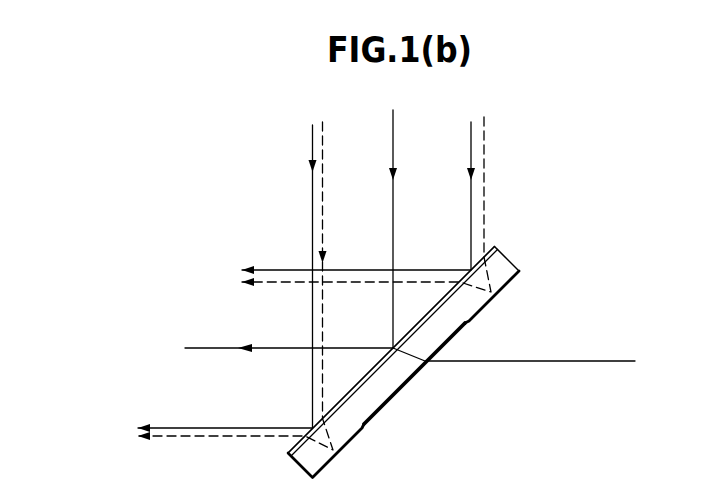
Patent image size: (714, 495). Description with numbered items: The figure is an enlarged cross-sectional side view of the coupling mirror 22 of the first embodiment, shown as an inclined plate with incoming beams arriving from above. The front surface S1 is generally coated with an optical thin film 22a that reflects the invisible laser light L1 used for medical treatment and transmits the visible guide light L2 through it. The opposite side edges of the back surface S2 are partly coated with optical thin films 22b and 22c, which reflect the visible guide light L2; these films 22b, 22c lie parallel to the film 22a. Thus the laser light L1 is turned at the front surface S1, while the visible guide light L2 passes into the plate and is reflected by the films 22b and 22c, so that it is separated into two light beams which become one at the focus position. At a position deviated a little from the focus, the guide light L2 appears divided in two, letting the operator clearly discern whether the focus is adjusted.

The coupling mirror 22 is at (506, 255).
The optical thin film 22a is at (437, 302).
The optical thin film 22b is at (510, 288).
The optical thin film 22c is at (353, 439).
The front surface S1 is at (352, 390).
The back surface S2 is at (397, 391).
The invisible laser light L1 is at (393, 146).
The visible guide light L2 is at (484, 152).